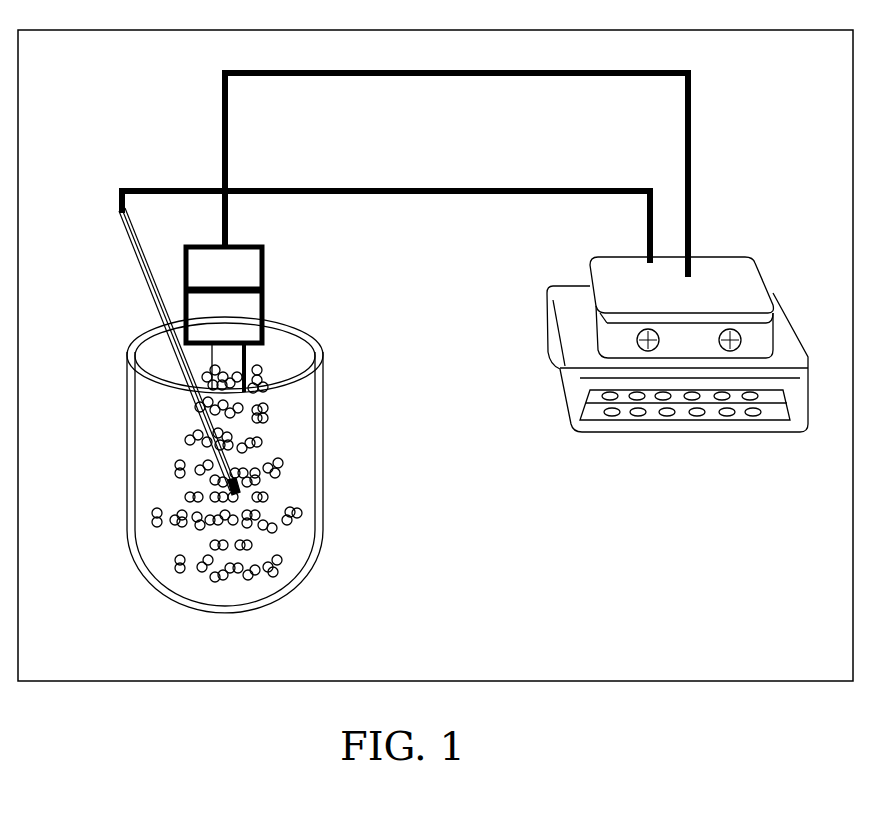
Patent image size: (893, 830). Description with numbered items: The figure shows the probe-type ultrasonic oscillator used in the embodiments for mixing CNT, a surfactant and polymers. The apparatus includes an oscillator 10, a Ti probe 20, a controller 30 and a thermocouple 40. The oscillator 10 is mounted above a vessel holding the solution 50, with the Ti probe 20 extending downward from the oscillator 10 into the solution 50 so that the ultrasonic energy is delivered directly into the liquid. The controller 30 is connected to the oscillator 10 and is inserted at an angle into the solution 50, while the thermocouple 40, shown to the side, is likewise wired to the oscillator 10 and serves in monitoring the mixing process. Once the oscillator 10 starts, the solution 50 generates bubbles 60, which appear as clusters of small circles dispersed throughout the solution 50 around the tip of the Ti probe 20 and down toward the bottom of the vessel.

The oscillator 10 is at (263, 292).
The Ti probe 20 is at (248, 358).
The controller 30 is at (121, 234).
The thermocouple 40 is at (630, 422).
The solution 50 is at (148, 420).
The bubbles 60 is at (267, 413).